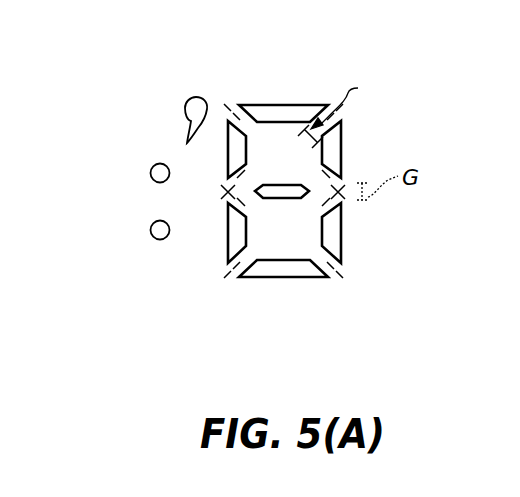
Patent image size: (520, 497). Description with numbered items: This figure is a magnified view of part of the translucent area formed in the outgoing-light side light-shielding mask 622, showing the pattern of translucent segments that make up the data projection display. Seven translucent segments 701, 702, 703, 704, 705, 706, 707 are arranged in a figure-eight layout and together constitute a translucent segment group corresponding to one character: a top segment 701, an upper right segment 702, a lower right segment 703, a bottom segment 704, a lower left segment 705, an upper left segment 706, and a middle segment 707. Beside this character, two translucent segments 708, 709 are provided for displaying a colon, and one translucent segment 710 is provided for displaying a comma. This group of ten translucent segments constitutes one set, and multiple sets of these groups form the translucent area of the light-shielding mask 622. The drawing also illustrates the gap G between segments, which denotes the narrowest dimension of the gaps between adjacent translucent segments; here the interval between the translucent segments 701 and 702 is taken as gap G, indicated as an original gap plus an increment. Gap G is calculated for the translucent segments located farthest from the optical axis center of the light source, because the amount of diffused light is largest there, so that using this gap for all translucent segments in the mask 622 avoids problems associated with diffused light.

The translucent segment 701 is at (284, 104).
The translucent segment 702 is at (341, 153).
The translucent segment 703 is at (339, 242).
The translucent segment 704 is at (253, 278).
The translucent segment 705 is at (228, 243).
The translucent segment 706 is at (228, 165).
The translucent segment 707 is at (275, 199).
The translucent segment 708 is at (153, 180).
The translucent segment 709 is at (153, 237).
The translucent segment 710 is at (186, 103).
The outgoing-light side light-shielding mask 622 is at (336, 88).